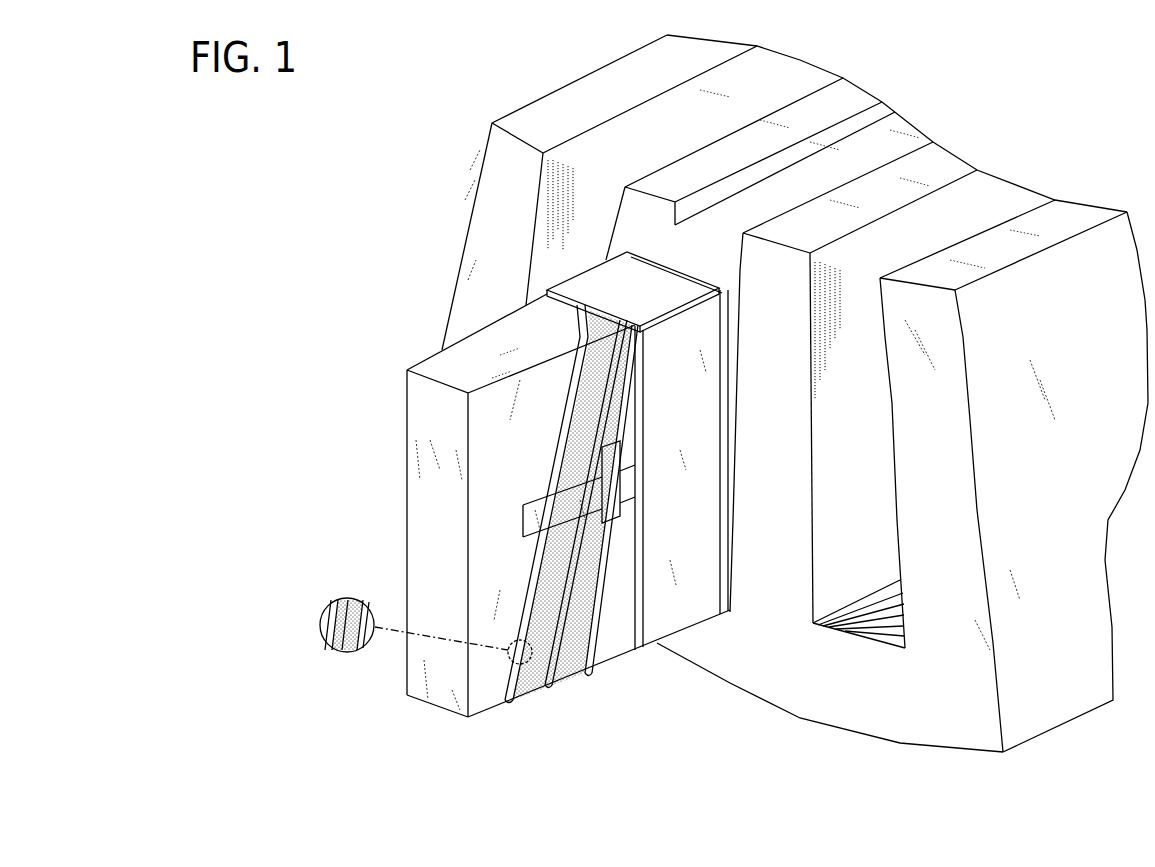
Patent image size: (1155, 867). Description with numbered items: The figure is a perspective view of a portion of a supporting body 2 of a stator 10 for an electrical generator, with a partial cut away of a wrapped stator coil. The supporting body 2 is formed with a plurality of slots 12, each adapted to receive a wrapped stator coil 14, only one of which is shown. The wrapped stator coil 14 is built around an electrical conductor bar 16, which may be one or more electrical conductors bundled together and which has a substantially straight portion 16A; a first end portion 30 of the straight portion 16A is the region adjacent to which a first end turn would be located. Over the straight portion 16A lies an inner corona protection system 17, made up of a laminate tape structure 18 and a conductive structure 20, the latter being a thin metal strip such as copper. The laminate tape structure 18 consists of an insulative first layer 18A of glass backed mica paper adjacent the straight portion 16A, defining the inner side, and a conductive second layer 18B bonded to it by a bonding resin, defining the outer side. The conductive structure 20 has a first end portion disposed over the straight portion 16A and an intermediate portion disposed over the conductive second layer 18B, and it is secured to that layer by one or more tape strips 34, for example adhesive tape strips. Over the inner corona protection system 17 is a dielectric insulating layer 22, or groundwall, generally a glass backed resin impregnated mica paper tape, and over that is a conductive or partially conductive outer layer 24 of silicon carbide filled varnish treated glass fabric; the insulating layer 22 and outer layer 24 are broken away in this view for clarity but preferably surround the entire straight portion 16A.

The supporting body 2 is at (1085, 725).
The stator 10 is at (418, 164).
The slots 12 is at (777, 73).
The wrapped stator coil 14 is at (418, 358).
The electrical conductor bar 16 is at (442, 676).
The straight portion 16A is at (713, 232).
The inner corona protection system 17 is at (596, 676).
The laminate tape structure 18 is at (574, 664).
The insulative first layer 18A is at (502, 684).
The conductive second layer 18B is at (627, 390).
The conductive structure 20 is at (545, 505).
The dielectric insulating layer 22 is at (657, 645).
The conductive outer layer 24 is at (683, 262).
The first end portion 30 is at (494, 479).
The tape strips 34 is at (615, 475).